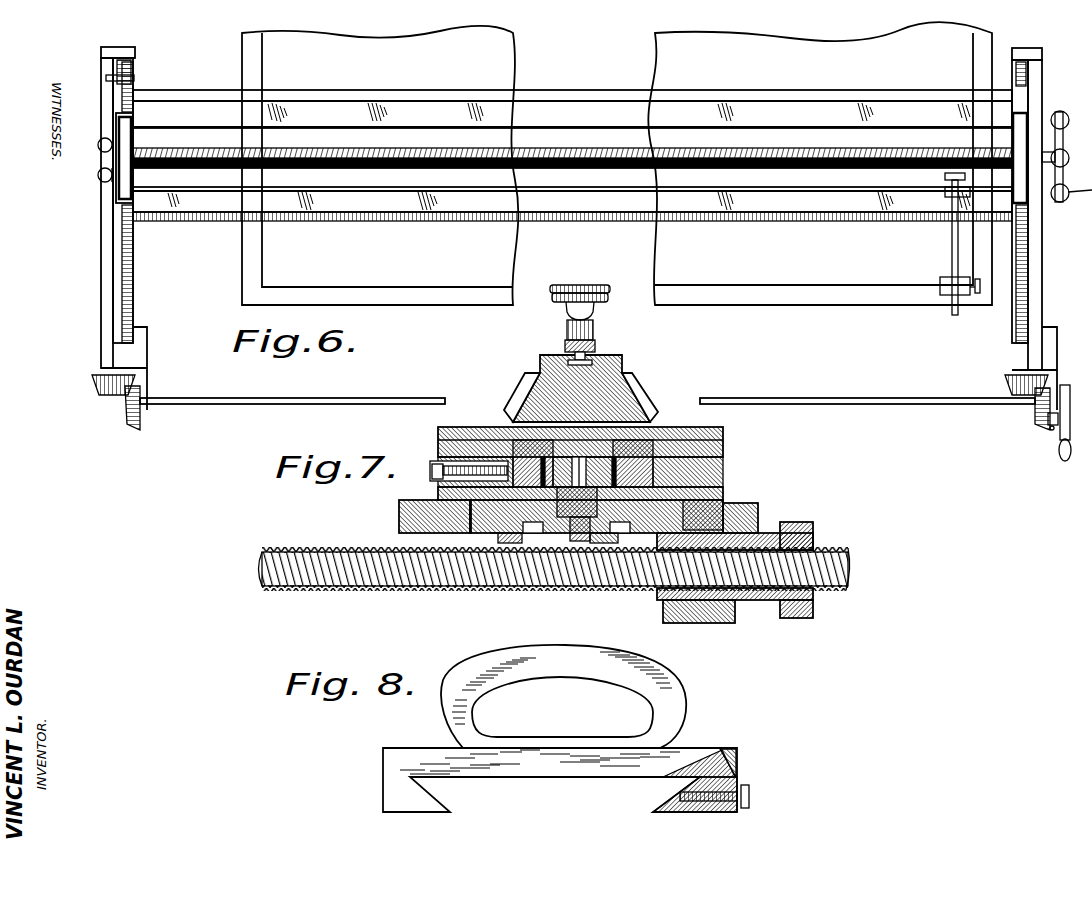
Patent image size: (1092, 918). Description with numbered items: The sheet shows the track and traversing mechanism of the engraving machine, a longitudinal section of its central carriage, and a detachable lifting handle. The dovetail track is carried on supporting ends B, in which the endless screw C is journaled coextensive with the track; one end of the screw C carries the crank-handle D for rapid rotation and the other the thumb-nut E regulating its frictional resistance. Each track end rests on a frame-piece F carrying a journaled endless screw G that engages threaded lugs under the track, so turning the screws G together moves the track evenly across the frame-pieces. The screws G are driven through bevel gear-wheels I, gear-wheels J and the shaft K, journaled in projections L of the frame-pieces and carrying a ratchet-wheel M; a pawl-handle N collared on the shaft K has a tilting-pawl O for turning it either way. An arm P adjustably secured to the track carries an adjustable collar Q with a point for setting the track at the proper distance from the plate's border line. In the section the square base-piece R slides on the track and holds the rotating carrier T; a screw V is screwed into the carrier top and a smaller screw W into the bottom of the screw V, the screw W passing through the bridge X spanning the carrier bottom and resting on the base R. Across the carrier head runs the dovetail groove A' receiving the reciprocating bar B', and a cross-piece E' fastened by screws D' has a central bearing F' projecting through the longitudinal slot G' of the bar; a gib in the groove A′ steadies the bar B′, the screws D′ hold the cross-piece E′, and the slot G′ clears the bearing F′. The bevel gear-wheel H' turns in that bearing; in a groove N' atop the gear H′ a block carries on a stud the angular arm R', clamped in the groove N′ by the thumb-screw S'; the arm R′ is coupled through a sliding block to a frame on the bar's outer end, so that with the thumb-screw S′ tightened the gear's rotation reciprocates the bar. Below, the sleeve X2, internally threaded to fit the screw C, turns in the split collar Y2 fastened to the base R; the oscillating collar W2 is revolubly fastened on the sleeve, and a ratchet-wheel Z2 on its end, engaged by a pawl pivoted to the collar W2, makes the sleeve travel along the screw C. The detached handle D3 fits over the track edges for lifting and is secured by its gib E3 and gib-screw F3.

In FIG. 6, the endless screw C is at (655, 165).
In FIG. 7, the endless screw C is at (258, 568).
In FIG. 6, the frame-piece F is at (99, 202).
In FIG. 6, the endless screw G is at (142, 69).
In FIG. 6, the gib-screw F3 is at (120, 78).
In FIG. 8, the gib-screw F3 is at (751, 801).
In FIG. 6, the supporting ends B is at (102, 151).
In FIG. 6, the handle D3 is at (98, 148).
In FIG. 8, the handle D3 is at (452, 708).
In FIG. 6, the thumb-nut E is at (84, 184).
In FIG. 6, the projections L is at (140, 377).
In FIG. 6, the bevel gear-wheels I is at (112, 388).
In FIG. 6, the gear-wheels J is at (132, 420).
In FIG. 6, the shaft K is at (838, 405).
In FIG. 6, the crank-handle D is at (1067, 156).
In FIG. 6, the ratchet-wheel M is at (1034, 420).
In FIG. 6, the tilting-pawl O is at (1046, 430).
In FIG. 6, the pawl-handle N is at (1075, 426).
In FIG. 6, the projecting arm P is at (952, 258).
In FIG. 6, the adjustable collar Q is at (950, 292).
In FIG. 7, the thumb-screw S' is at (580, 288).
In FIG. 7, the angular arm R' is at (597, 327).
In FIG. 7, the groove N' is at (602, 345).
In FIG. 7, the bevel gear-wheel H' is at (593, 387).
In FIG. 7, the cross-piece E' is at (582, 437).
In FIG. 7, the screws D' is at (601, 439).
In FIG. 7, the reciprocating bar B' is at (599, 469).
In FIG. 7, the longitudinal slot G' is at (455, 460).
In FIG. 7, the groove A' is at (607, 506).
In FIG. 7, the square base-piece R is at (418, 516).
In FIG. 7, the smaller screw W is at (570, 588).
In FIG. 7, the bridge X is at (515, 588).
In FIG. 7, the screw V is at (535, 590).
In FIG. 7, the rotating carrier T is at (416, 588).
In FIG. 7, the central bearing F' is at (475, 586).
In FIG. 7, the ratchet-wheel Z2 is at (790, 522).
In FIG. 7, the sleeve X2 is at (658, 603).
In FIG. 7, the split collar Y2 is at (736, 612).
In FIG. 7, the oscillating collar W2 is at (813, 609).
In FIG. 8, the gib E3 is at (740, 772).
In FIG. 7, the thumb-screw S′ is at (580, 288).
In FIG. 7, the angular arm R′ is at (597, 327).
In FIG. 7, the groove N′ is at (602, 345).
In FIG. 7, the bevel gear-wheel H′ is at (593, 387).
In FIG. 7, the cross-piece E′ is at (582, 437).
In FIG. 7, the screws D′ is at (601, 439).
In FIG. 7, the reciprocating bar B′ is at (599, 469).
In FIG. 7, the longitudinal slot G′ is at (455, 460).
In FIG. 7, the groove A′ is at (607, 506).
In FIG. 7, the central bearing F′ is at (475, 586).